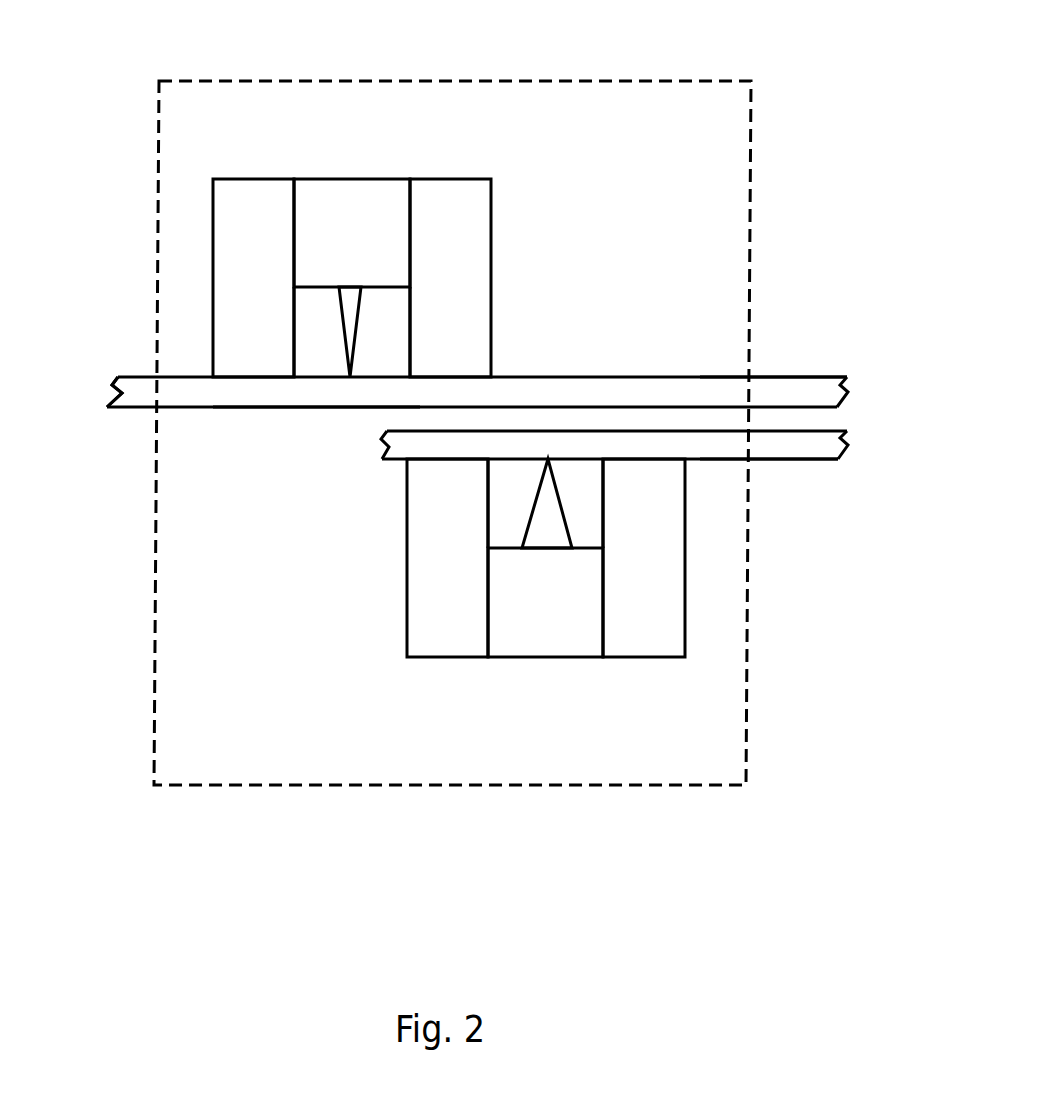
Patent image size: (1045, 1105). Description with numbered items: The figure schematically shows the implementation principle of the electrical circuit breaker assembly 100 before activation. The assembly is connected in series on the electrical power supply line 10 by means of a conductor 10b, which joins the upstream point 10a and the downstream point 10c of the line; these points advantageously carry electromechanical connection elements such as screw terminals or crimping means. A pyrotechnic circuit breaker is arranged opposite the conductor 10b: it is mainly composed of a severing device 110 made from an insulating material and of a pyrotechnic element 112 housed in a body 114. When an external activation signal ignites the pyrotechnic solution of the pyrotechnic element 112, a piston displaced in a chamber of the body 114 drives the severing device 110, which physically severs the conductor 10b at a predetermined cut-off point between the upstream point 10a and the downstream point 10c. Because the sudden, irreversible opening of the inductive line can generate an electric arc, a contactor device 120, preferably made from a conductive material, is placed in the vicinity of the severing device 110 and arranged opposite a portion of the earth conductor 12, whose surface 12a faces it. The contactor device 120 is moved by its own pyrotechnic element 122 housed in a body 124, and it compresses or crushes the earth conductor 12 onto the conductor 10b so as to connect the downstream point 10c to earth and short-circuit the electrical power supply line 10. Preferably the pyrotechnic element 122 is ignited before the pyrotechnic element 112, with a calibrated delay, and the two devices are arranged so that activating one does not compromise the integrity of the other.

The electrical circuit breaker assembly 100 is at (368, 81).
The electrical power supply line 10 is at (815, 385).
The upstream point 10a is at (137, 395).
The conductor 10b is at (317, 398).
The downstream point 10c is at (777, 385).
The earth conductor 12 is at (820, 452).
The lower surface of second panel 12a is at (766, 452).
The severing device 110 is at (350, 303).
The pyrotechnic element 112 is at (333, 190).
The body 114 is at (263, 188).
The contactor device 120 is at (548, 520).
The pyrotechnic element 122 is at (535, 642).
The body 124 is at (422, 593).